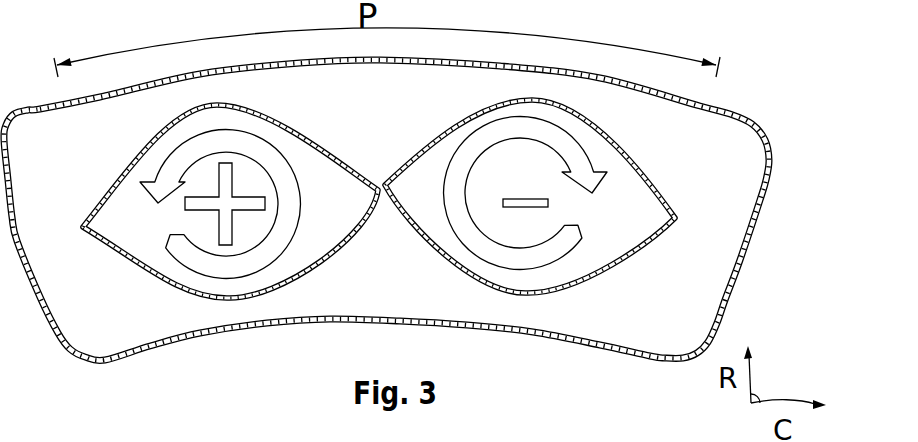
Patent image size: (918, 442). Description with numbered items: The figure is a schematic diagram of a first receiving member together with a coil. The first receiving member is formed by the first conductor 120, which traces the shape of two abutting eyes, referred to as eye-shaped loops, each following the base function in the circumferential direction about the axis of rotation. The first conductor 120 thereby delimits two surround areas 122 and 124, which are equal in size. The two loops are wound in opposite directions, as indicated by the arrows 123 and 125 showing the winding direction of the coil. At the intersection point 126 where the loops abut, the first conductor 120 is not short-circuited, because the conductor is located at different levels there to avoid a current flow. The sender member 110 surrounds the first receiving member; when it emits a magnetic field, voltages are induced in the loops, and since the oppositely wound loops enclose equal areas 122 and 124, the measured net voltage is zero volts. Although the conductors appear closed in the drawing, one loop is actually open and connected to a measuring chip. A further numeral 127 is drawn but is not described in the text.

The sender member 110 is at (733, 287).
The first conductor 120 is at (659, 188).
The surround area 122 is at (352, 201).
The arrow 123 is at (185, 153).
The surround area 124 is at (649, 229).
The arrow 125 is at (501, 137).
The intersection point 126 is at (383, 192).
The lower element 127 is at (131, 437).